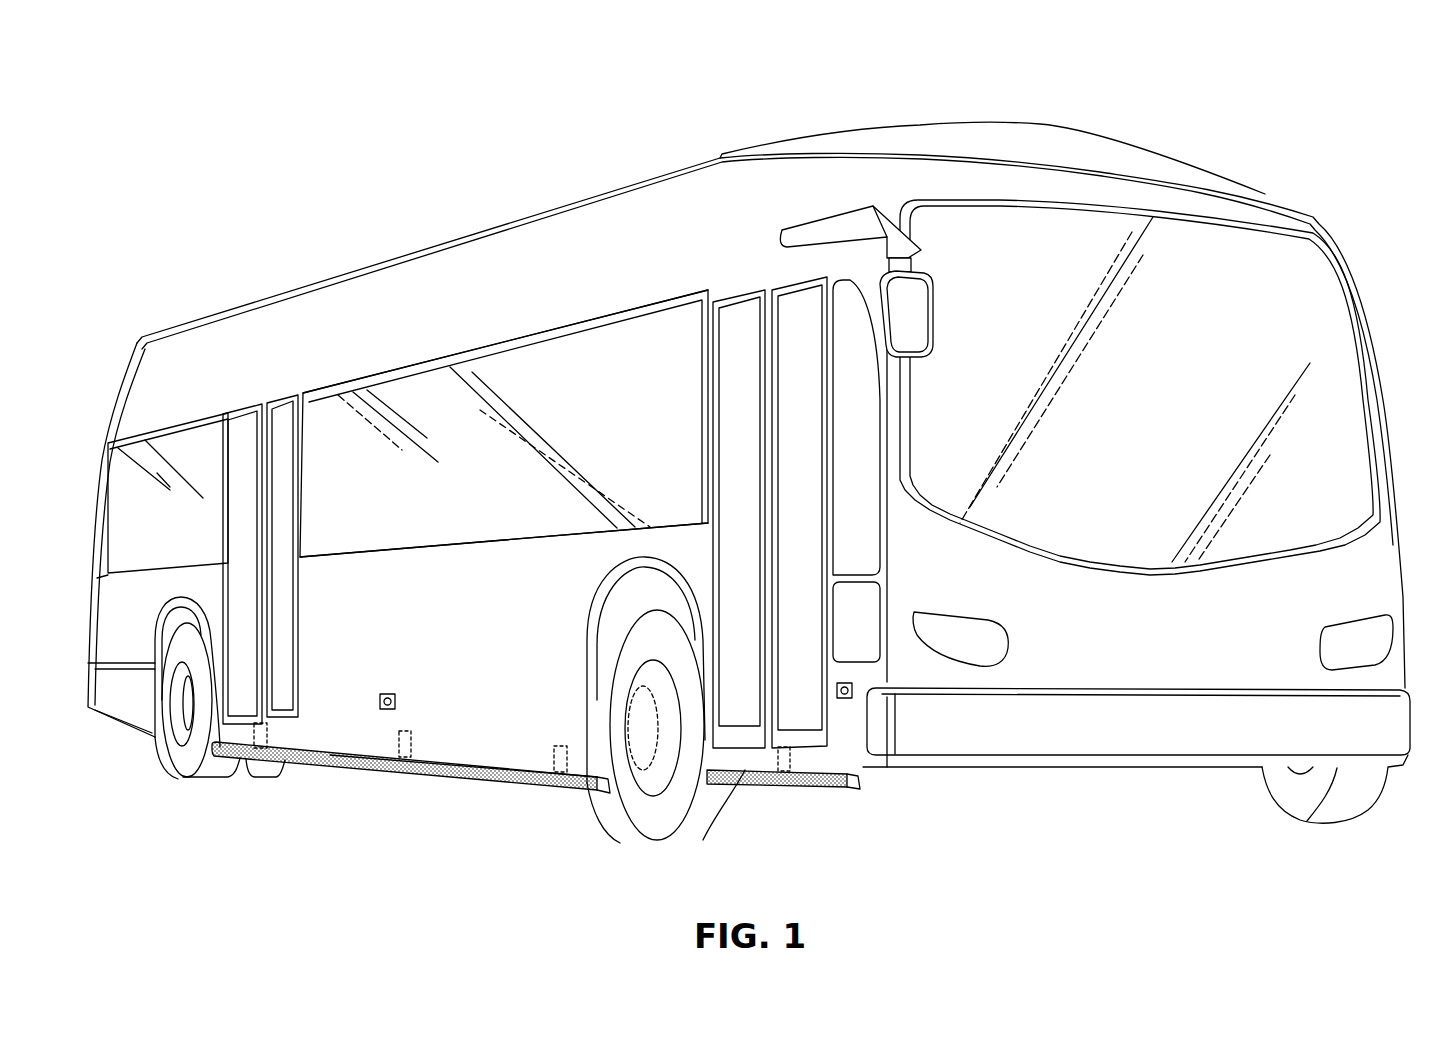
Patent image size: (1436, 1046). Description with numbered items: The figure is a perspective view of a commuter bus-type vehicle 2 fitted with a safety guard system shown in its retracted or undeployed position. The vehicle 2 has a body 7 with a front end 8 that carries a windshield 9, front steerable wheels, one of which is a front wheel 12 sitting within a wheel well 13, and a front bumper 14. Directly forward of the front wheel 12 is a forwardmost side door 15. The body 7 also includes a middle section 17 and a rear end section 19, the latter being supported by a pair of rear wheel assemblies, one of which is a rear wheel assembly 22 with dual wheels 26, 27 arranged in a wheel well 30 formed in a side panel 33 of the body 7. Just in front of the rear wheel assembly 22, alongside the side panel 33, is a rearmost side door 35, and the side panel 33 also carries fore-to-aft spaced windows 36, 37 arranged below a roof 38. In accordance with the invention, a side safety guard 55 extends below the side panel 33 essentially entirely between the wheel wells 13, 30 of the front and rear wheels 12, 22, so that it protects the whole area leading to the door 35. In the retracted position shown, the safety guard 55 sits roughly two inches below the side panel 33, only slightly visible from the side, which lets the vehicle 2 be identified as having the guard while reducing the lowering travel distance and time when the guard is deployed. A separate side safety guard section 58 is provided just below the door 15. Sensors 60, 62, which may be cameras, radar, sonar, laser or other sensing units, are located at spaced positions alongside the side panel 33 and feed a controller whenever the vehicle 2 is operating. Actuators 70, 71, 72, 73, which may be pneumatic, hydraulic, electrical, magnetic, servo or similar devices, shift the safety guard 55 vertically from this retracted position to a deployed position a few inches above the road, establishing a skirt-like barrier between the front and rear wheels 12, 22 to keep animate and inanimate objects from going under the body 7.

The vehicle 2 is at (749, 463).
The body 7 is at (490, 268).
The front end 8 is at (843, 735).
The windshield 9 is at (1320, 324).
The front steerable wheel 12 is at (650, 823).
The wheel well 13 is at (610, 607).
The front bumper 14 is at (1377, 712).
The forwardmost side door 15 is at (757, 738).
The middle section 17 is at (357, 703).
The rear end section 19 is at (106, 597).
The rear wheel assembly 22 is at (171, 729).
The dual wheel 26 is at (203, 770).
The dual wheel 27 is at (253, 778).
The wheel well 30 is at (167, 633).
The side panel 33 is at (443, 716).
The rearmost side door 35 is at (282, 454).
The window 36 is at (425, 390).
The window 37 is at (191, 452).
The roof 38 is at (664, 168).
The side safety guard 55 is at (488, 793).
The side safety guard section 58 is at (822, 790).
The sensor 60 is at (853, 692).
The sensor 62 is at (386, 710).
The actuator 70 is at (783, 745).
The actuator 71 is at (560, 772).
The actuator 72 is at (403, 757).
The actuator 73 is at (268, 748).